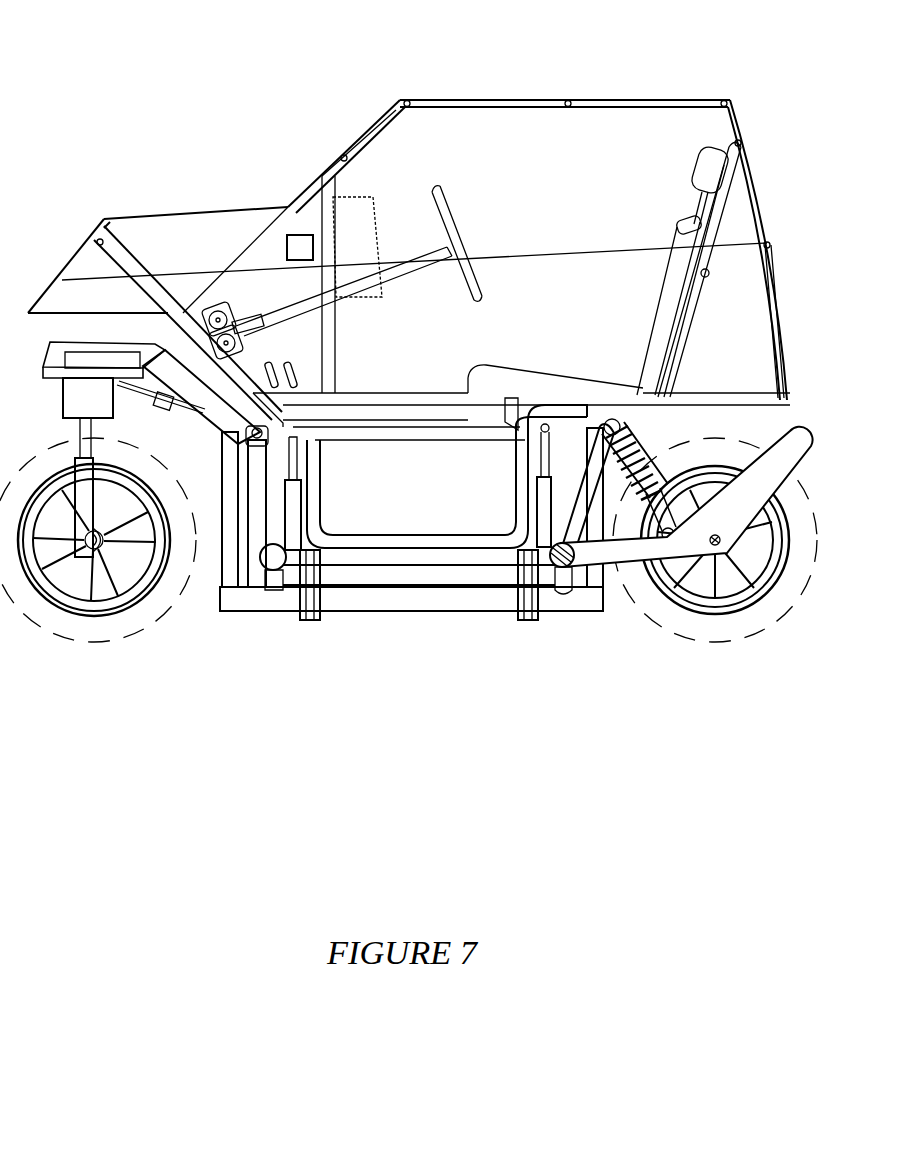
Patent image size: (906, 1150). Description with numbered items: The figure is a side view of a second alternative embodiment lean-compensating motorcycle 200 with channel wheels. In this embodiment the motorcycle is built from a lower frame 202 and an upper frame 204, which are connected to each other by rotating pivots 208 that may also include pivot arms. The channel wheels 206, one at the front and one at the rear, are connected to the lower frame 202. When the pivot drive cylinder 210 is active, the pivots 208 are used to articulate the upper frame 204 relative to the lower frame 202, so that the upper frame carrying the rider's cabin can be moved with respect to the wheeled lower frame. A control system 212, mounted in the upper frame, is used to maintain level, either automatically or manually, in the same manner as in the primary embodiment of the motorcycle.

The second alternative embodiment motorcycle 200 is at (106, 68).
The lower frame 202 is at (570, 617).
The upper frame 204 is at (368, 572).
The channel wheels 206 is at (91, 630).
The rotating pivots 208 is at (317, 630).
The pivot drive cylinder 210 is at (285, 580).
The control system 212 is at (295, 222).